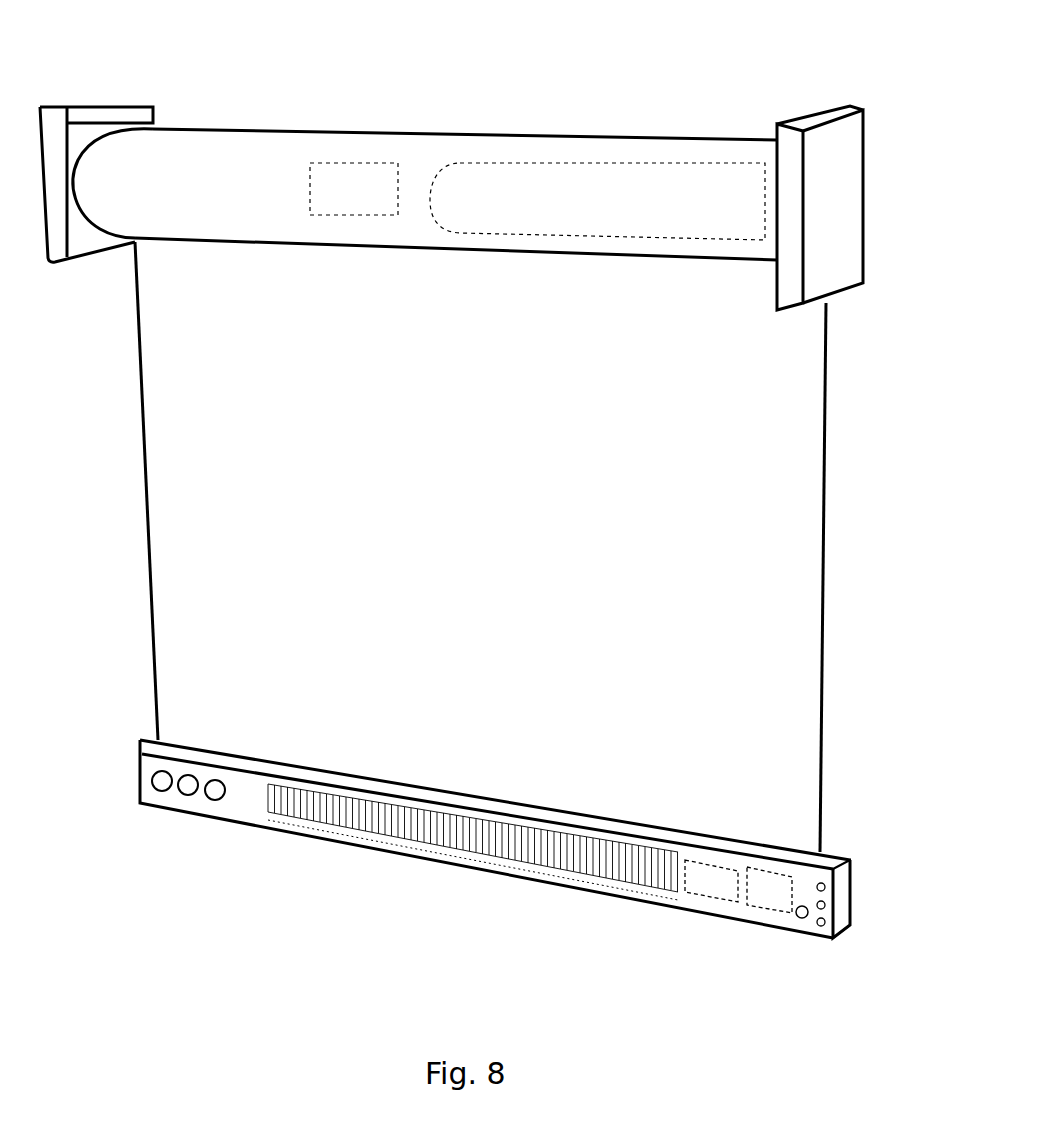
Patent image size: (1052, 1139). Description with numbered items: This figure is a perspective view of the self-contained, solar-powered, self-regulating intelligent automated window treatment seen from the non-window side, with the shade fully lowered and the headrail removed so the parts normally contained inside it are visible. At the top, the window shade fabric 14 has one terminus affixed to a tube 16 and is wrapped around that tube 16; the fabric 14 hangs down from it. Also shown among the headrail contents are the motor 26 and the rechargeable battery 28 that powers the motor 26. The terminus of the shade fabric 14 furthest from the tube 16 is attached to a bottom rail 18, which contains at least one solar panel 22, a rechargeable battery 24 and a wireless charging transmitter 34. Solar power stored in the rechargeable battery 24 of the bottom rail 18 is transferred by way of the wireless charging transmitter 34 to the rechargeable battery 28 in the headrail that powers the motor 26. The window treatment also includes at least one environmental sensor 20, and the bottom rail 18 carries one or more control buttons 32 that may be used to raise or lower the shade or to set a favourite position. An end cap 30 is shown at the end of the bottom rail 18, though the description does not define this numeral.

The window shade fabric 14 is at (758, 600).
The tube 16 is at (147, 208).
The bottom rail 18 is at (243, 795).
The environmental sensor 20 is at (801, 918).
The solar panel 22 is at (465, 827).
The rechargeable battery 24 is at (712, 883).
The motor 26 is at (607, 215).
The rechargeable battery 28 is at (340, 183).
The end cap 30 is at (846, 862).
The control buttons 32 is at (187, 795).
The wireless charging transmitter 34 is at (764, 888).